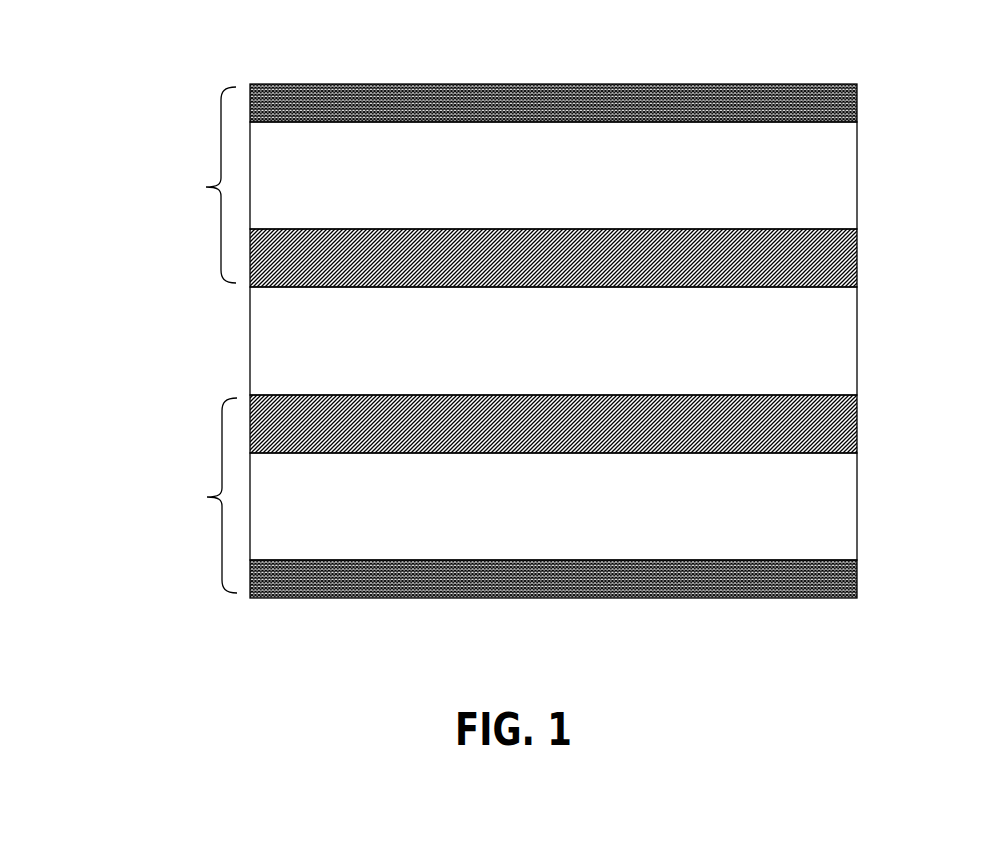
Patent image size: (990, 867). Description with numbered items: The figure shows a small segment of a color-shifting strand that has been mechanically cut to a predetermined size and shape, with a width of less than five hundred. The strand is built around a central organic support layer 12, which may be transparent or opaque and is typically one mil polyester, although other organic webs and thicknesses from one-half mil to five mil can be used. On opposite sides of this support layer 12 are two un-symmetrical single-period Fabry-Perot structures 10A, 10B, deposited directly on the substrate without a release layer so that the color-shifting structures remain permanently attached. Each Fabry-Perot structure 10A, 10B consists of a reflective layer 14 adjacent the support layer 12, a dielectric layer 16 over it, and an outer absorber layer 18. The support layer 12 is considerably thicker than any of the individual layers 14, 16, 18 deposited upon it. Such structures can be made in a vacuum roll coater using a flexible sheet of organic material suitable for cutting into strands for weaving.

The single-period Fabry-Perot structure 10A is at (182, 185).
The single-period Fabry-Perot structure 10B is at (185, 495).
The organic support layer 12 is at (857, 345).
The reflective layer 14 is at (857, 262).
The dielectric layer 16 is at (857, 162).
The absorber layer 18 is at (827, 84).